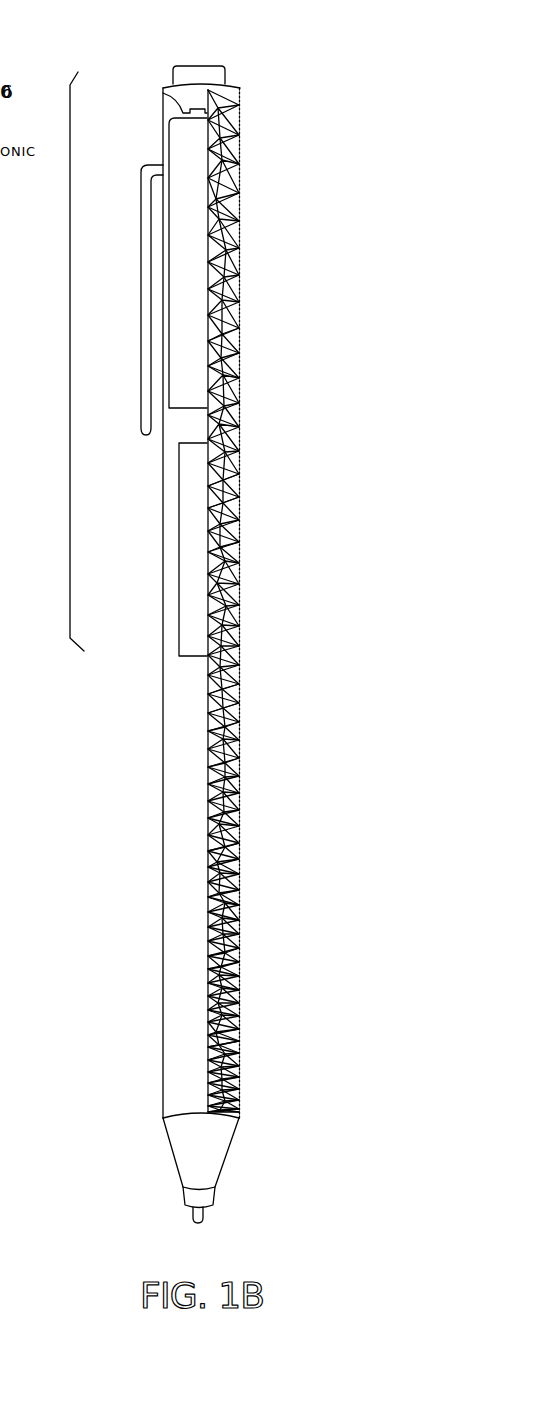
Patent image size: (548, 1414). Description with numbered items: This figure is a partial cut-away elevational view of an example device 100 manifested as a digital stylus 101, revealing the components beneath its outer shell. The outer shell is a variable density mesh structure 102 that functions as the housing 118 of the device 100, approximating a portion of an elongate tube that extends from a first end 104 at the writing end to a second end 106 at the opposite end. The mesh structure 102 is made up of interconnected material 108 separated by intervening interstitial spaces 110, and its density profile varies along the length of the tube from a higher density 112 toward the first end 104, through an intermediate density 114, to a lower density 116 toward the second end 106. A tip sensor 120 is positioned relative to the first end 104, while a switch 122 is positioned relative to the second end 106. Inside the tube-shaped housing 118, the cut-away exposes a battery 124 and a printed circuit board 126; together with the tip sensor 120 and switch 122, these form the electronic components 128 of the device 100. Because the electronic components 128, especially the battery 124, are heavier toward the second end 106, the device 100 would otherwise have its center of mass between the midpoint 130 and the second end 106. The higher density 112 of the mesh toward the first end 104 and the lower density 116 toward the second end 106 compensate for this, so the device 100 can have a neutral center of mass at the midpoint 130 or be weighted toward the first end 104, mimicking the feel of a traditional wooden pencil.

The device 100 is at (157, 44).
The digital stylus 101 is at (257, 1259).
The variable density mesh structure 102 is at (234, 440).
The first end 104 is at (242, 1110).
The second end 106 is at (241, 90).
The interconnected material 108 is at (257, 574).
The interstitial spaces 110 is at (234, 584).
The higher density 112 is at (250, 1095).
The intermediate density 114 is at (245, 707).
The lower density 116 is at (251, 143).
The housing 118 is at (229, 85).
The tip sensor 120 is at (177, 1197).
The switch 122 is at (200, 65).
The battery 124 is at (163, 96).
The printed circuit board 126 is at (179, 492).
The electronic components 128 is at (70, 186).
The midpoint 130 is at (161, 593).